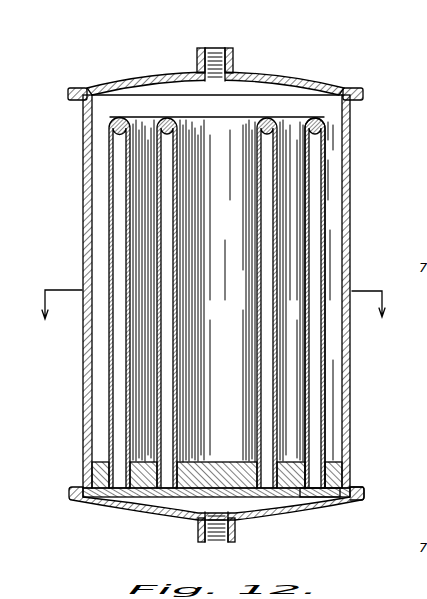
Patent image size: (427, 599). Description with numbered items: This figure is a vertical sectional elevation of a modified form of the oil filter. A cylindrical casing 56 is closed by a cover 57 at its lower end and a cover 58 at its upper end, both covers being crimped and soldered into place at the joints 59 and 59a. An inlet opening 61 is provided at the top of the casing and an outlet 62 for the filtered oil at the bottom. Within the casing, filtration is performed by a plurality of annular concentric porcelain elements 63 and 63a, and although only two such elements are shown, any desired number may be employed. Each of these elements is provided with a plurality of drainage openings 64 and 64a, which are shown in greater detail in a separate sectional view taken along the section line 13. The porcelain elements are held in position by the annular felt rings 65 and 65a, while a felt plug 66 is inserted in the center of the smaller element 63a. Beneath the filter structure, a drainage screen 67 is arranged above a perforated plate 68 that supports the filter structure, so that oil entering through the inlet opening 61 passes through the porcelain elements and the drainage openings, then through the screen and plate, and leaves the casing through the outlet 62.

The section line 13 is at (215, 314).
The cylindrical casing 56 is at (83, 223).
The lower cover 57 is at (109, 512).
The upper cover 58 is at (300, 77).
The joint 59 is at (74, 95).
The joint 59a is at (363, 494).
The inlet opening 61 is at (224, 47).
The outlet 62 is at (228, 541).
The annular concentric porcelain element 63 is at (323, 357).
The annular concentric porcelain element 63a is at (243, 298).
The drainage opening 64 is at (316, 384).
The drainage opening 64a is at (167, 393).
The annular felt ring 65 is at (92, 467).
The annular felt ring 65a is at (292, 462).
The felt plug 66 is at (220, 463).
The drainage screen 67 is at (171, 497).
The perforated plate 68 is at (317, 498).